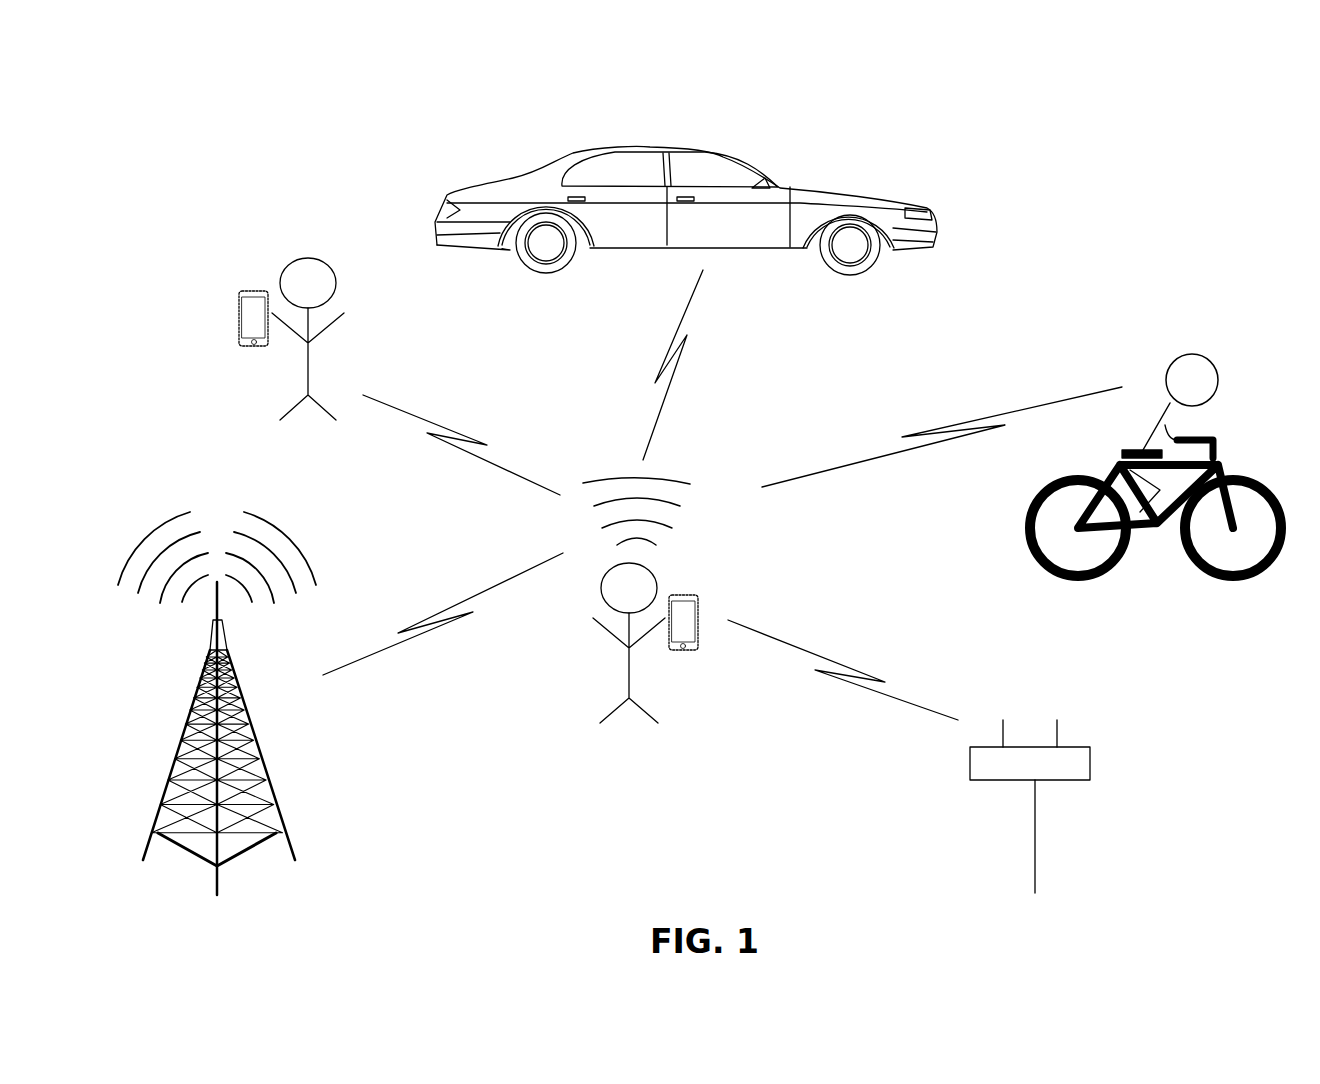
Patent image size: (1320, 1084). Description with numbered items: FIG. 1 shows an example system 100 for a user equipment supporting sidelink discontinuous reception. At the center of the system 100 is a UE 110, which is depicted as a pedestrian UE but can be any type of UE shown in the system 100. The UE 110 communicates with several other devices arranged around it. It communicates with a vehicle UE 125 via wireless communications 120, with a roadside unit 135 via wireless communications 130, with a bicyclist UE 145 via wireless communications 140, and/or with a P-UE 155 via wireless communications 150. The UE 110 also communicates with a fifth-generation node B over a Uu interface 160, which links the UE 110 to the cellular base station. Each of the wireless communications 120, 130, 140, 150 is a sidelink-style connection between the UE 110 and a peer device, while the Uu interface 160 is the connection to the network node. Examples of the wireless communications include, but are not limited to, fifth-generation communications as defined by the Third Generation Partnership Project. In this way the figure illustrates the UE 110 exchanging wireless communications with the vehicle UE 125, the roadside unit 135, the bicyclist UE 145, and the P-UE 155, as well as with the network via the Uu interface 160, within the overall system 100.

The system 100 is at (1127, 113).
The user equipment (UE) 110 is at (677, 650).
The wireless communications 120 is at (672, 392).
The vehicle UE (V-UE) 125 is at (805, 187).
The wireless communications 130 is at (902, 697).
The roadside unit (RSU) 135 is at (1090, 762).
The wireless communications 140 is at (853, 467).
The bicyclist UE 145 is at (1108, 573).
The wireless communications 150 is at (430, 422).
The P-UE 155 is at (258, 346).
The Uu interface 160 is at (392, 647).